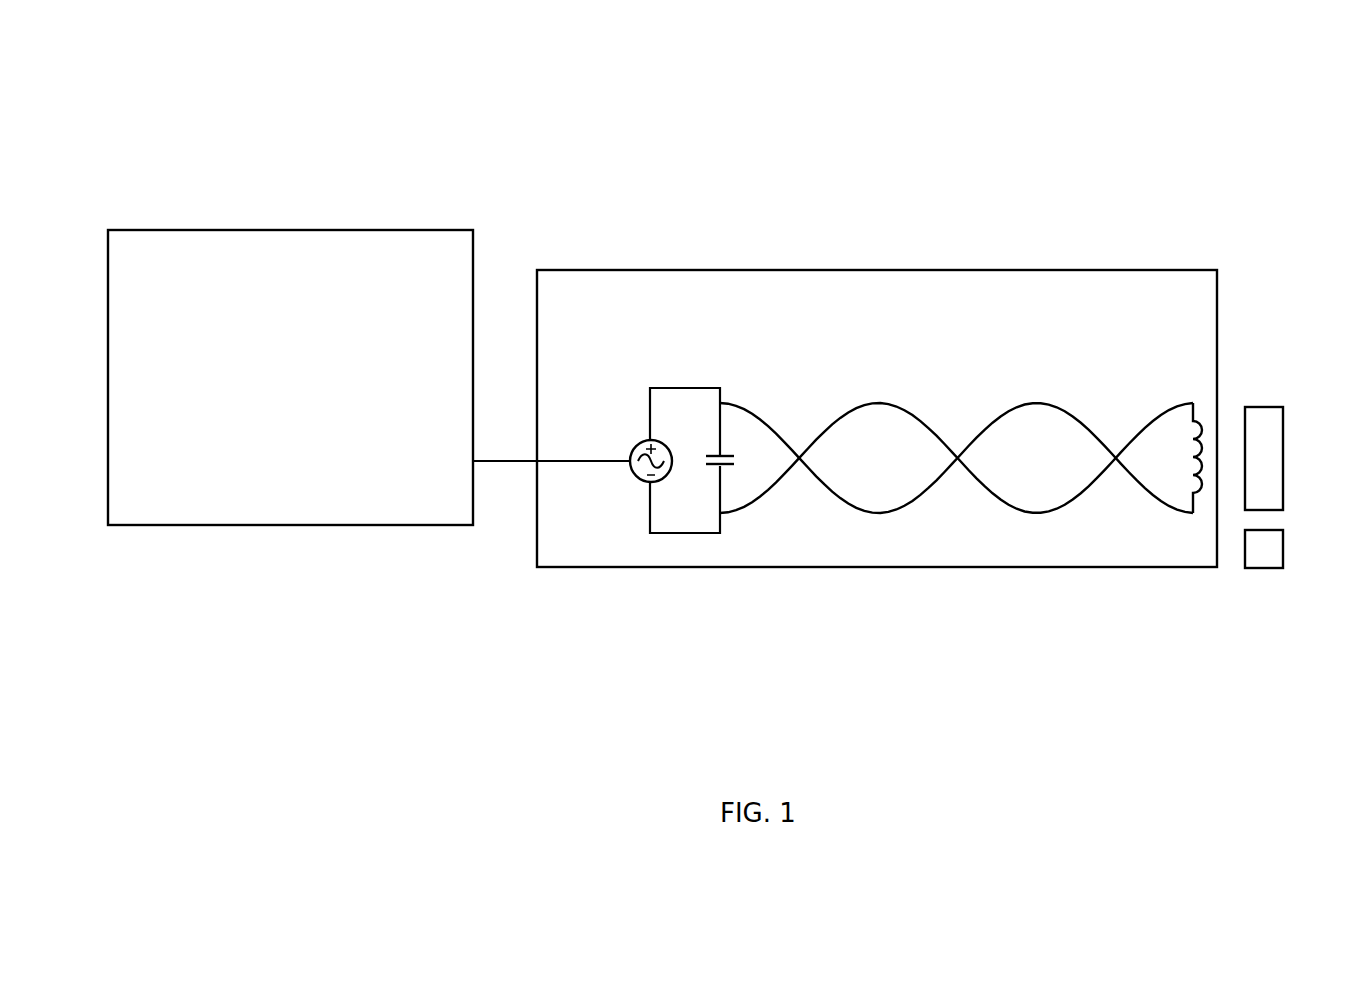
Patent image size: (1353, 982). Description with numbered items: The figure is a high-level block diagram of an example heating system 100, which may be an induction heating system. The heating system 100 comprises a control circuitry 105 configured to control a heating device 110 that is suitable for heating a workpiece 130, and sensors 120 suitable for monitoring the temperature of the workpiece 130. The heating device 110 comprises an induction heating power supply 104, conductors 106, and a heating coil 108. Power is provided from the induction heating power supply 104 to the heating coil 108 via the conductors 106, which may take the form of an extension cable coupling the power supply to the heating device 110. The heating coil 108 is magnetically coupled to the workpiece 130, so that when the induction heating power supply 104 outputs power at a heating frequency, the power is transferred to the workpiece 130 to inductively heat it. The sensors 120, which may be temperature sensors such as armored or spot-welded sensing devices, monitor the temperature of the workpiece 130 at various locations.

The heating system 100 is at (499, 60).
The induction heating power supply 104 is at (640, 447).
The control circuitry 105 is at (290, 377).
The conductors 106 is at (768, 417).
The heating coil 108 is at (1198, 418).
The heating device 110 is at (929, 268).
The sensors 120 is at (1263, 577).
The workpiece 130 is at (1265, 405).